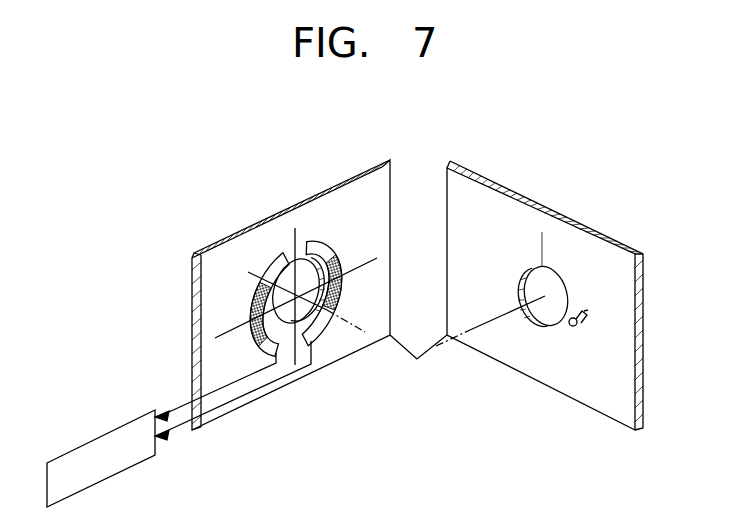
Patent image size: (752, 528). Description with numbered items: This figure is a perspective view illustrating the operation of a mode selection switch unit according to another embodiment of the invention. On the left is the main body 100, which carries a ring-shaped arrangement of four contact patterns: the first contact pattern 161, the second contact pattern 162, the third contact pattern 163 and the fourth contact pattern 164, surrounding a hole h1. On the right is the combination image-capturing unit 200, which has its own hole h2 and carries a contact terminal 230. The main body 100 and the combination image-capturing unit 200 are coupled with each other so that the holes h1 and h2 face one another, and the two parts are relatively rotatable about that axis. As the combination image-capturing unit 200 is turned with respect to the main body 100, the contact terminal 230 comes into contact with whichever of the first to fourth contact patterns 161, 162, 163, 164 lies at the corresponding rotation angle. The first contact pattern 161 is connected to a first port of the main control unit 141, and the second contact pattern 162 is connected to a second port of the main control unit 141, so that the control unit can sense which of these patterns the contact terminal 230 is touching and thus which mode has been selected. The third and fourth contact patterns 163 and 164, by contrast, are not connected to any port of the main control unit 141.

The main body 100 is at (255, 228).
The main control unit 141 is at (131, 421).
The first contact pattern 161 is at (261, 315).
The second contact pattern 162 is at (276, 256).
The third contact pattern 163 is at (276, 304).
The fourth contact pattern 164 is at (282, 352).
The combination image-capturing unit 200 is at (610, 242).
The contact terminal 230 is at (572, 325).
The hole h1 is at (320, 340).
The hole h2 is at (540, 325).